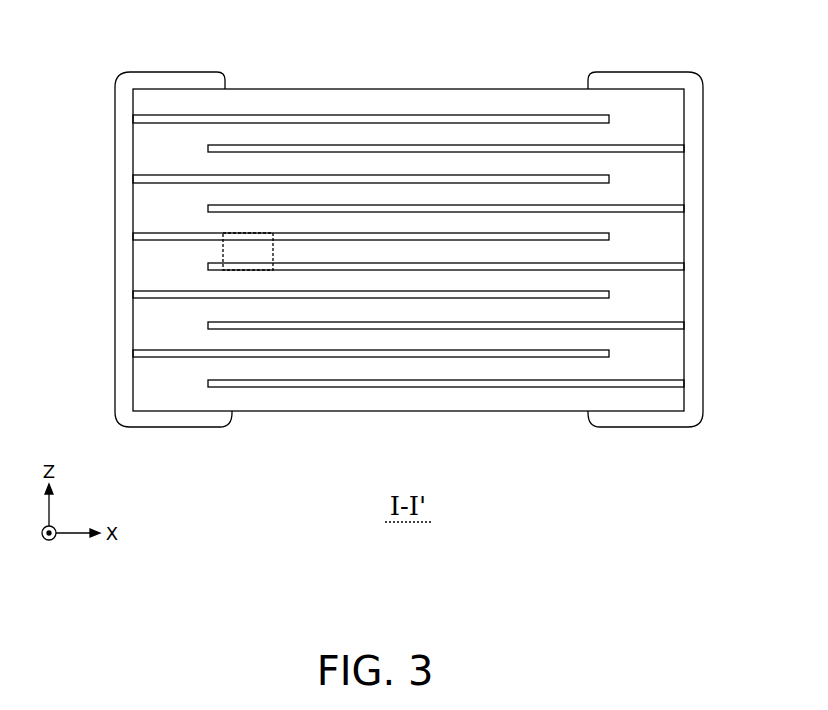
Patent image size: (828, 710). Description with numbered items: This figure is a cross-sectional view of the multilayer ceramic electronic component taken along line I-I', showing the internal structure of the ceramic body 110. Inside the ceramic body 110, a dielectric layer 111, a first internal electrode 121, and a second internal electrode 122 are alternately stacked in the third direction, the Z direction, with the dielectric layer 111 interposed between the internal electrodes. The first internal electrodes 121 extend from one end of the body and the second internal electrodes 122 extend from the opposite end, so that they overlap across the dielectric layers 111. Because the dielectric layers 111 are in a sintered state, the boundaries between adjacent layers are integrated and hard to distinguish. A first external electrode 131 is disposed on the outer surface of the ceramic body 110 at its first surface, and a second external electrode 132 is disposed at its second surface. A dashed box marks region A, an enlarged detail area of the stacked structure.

The ceramic body 110 is at (408, 246).
The dielectric layer 111 is at (490, 337).
The first internal electrode 121 is at (392, 360).
The second internal electrode 122 is at (348, 325).
The first external electrode 131 is at (172, 72).
The second external electrode 132 is at (645, 73).
The region A is at (222, 250).